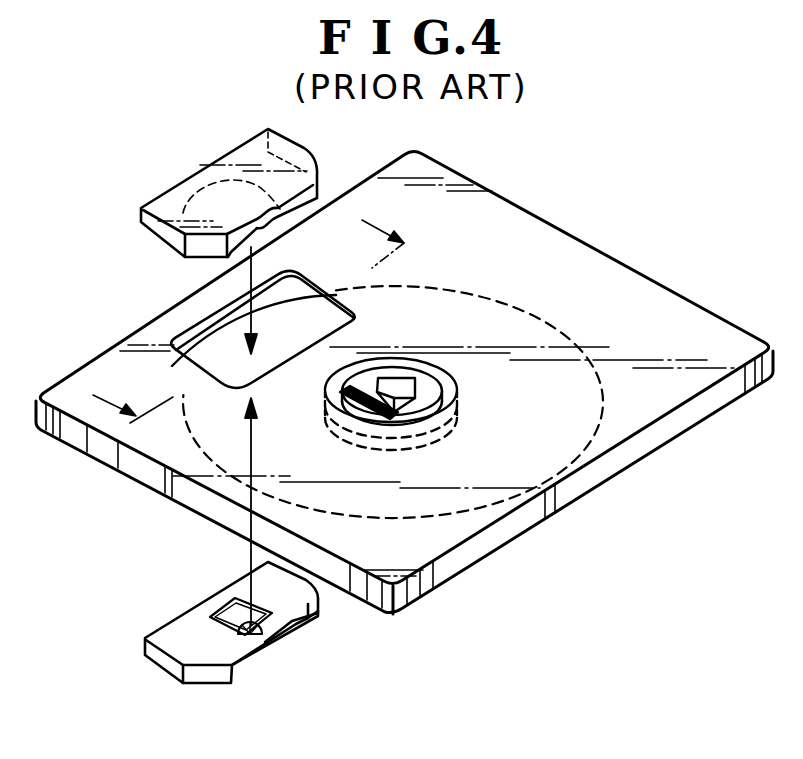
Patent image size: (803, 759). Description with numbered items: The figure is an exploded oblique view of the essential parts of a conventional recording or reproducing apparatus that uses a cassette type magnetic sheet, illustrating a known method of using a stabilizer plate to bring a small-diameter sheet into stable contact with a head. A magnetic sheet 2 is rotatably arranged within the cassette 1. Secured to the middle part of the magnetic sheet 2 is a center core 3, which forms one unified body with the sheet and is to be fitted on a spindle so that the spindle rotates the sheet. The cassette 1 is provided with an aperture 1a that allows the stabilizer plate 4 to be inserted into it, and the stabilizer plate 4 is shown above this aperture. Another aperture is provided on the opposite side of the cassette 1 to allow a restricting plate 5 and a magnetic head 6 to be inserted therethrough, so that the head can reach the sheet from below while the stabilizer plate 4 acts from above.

The cassette 1 is at (632, 290).
The aperture 1a is at (190, 336).
The magnetic sheet 2 is at (593, 440).
The center core 3 is at (432, 388).
The stabilizer plate 4 is at (238, 153).
The restricting plate 5 is at (178, 637).
The magnetic head 6 is at (262, 637).